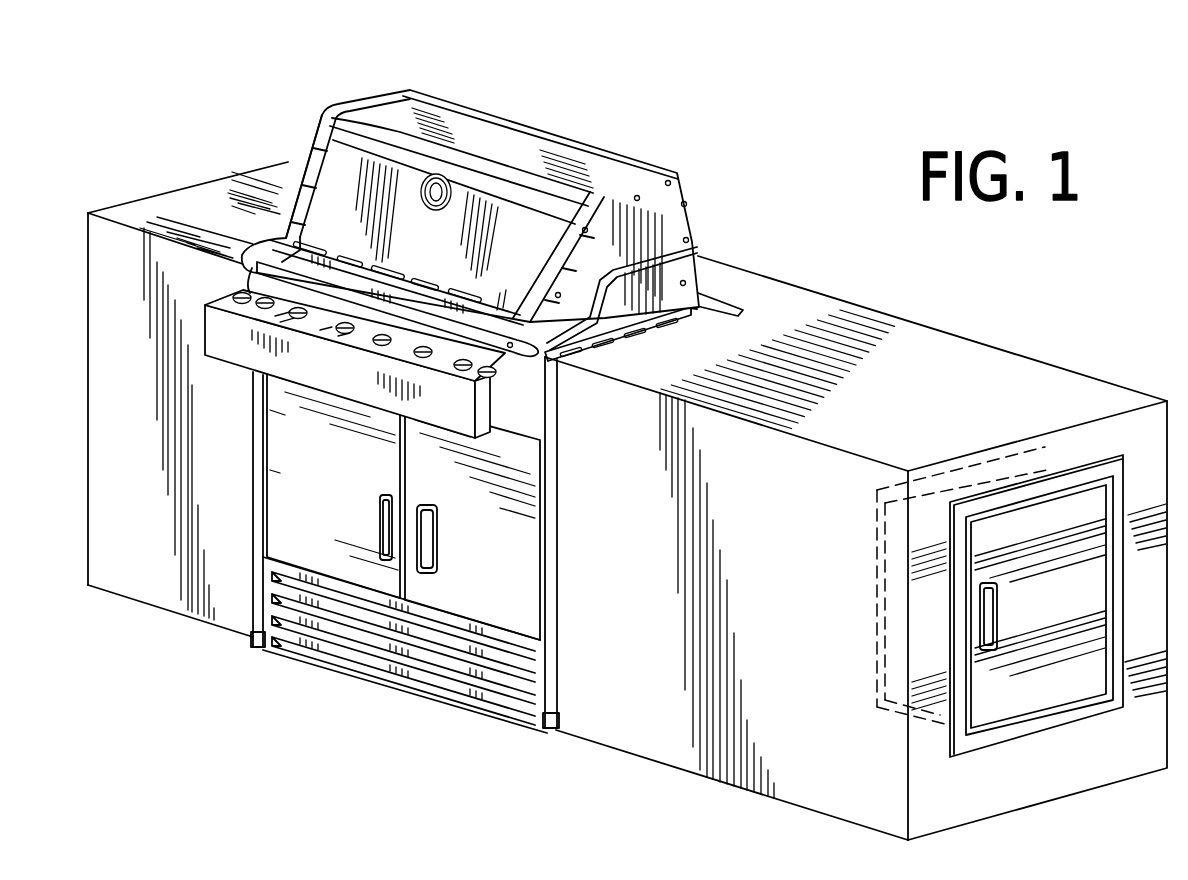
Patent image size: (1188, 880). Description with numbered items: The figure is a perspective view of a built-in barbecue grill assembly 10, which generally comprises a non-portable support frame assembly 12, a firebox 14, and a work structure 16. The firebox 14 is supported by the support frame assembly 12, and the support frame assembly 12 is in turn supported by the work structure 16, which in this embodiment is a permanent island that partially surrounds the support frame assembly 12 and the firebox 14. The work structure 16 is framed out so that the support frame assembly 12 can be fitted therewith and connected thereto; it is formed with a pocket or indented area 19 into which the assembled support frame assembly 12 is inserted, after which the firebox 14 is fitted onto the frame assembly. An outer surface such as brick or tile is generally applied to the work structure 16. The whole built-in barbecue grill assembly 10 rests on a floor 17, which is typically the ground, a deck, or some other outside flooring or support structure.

The built-in barbecue grill assembly 10 is at (627, 426).
The support frame assembly 12 is at (548, 700).
The firebox 14 is at (458, 125).
The work structure 16 is at (960, 352).
The floor 17 is at (608, 747).
The indented area 19 is at (683, 331).